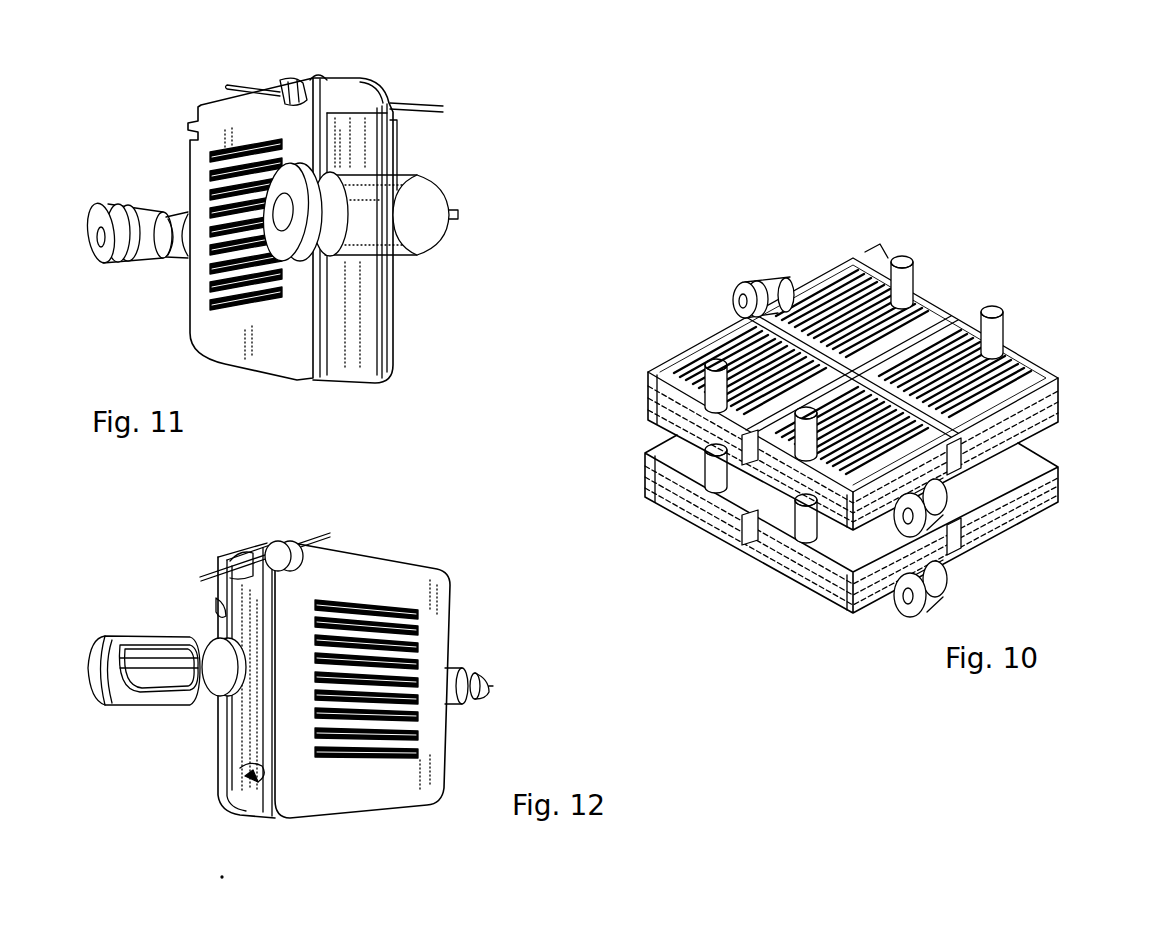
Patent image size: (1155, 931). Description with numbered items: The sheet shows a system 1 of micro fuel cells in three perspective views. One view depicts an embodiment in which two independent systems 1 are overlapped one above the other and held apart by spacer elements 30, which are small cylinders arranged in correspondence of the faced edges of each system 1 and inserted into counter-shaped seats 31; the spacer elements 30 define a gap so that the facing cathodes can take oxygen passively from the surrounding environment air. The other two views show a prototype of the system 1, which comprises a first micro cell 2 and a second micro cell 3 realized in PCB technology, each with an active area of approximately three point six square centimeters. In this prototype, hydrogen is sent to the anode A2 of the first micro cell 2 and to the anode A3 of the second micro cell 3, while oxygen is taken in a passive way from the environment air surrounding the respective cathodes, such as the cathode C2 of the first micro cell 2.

In FIG. 11, the system 1 is at (310, 249).
In FIG. 12, the system 1 is at (299, 649).
In FIG. 10, the system 1 is at (842, 412).
In FIG. 11, the first micro cell 2 is at (277, 354).
In FIG. 12, the first micro cell 2 is at (218, 782).
In FIG. 11, the second micro cell 3 is at (393, 320).
In FIG. 12, the second micro cell 3 is at (418, 589).
In FIG. 10, the spacer elements 30 is at (1005, 330).
In FIG. 10, the counter-shaped seats 31 is at (648, 393).
In FIG. 12, the anode of the first micro cell A2 is at (220, 608).
In FIG. 12, the anode of the second micro cell A3 is at (258, 780).
In FIG. 11, the cathode of the first micro cell C2 is at (222, 326).